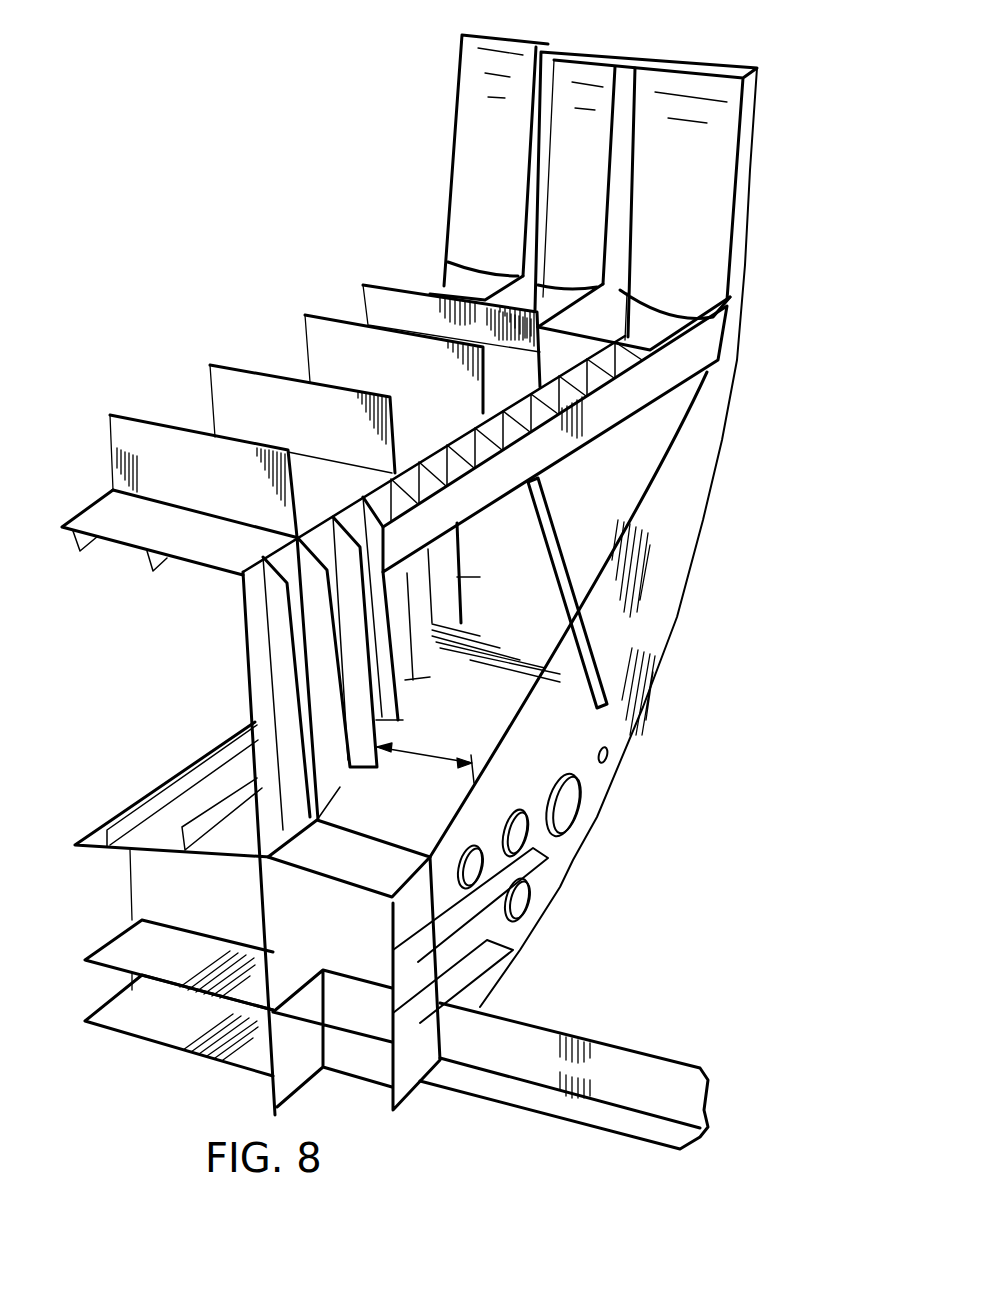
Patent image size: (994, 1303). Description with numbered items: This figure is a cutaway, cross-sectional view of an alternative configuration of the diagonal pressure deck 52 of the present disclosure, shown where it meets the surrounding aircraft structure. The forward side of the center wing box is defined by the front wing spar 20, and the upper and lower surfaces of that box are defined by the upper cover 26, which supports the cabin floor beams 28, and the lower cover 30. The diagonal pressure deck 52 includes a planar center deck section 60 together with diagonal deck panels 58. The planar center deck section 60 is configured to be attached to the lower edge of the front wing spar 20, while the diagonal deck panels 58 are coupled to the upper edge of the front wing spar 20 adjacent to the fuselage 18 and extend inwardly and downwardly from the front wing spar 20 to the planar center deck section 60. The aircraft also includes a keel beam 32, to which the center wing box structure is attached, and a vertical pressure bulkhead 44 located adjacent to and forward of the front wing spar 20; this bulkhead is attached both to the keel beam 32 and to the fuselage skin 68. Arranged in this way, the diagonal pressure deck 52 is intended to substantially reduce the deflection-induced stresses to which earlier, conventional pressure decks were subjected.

The fuselage 18 is at (758, 104).
The front wing spar 20 is at (245, 660).
The upper cover 26 is at (90, 510).
The cabin floor beams 28 is at (214, 366).
The lower cover 30 is at (92, 838).
The keel beam 32 is at (650, 1050).
The vertical pressure bulkhead 44 is at (672, 615).
The diagonal pressure deck 52 is at (735, 571).
The diagonal deck panels 58 is at (668, 425).
The planar center deck section 60 is at (345, 875).
The fuselage skin 68 is at (430, 750).